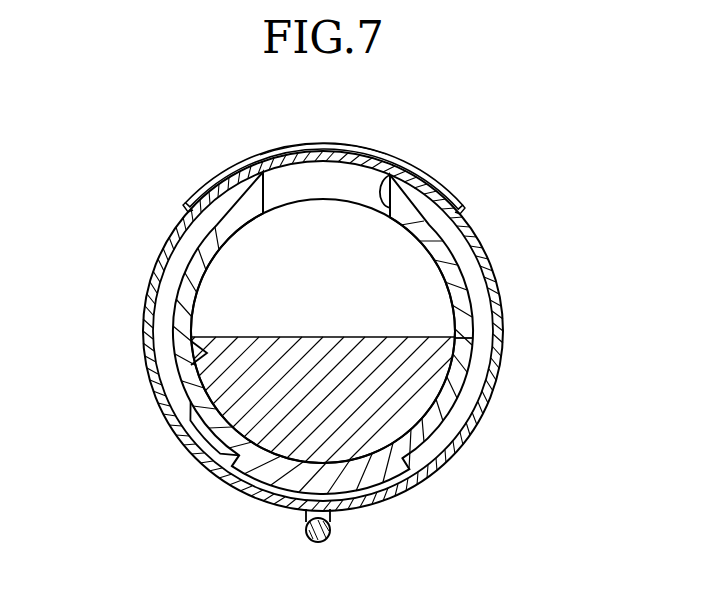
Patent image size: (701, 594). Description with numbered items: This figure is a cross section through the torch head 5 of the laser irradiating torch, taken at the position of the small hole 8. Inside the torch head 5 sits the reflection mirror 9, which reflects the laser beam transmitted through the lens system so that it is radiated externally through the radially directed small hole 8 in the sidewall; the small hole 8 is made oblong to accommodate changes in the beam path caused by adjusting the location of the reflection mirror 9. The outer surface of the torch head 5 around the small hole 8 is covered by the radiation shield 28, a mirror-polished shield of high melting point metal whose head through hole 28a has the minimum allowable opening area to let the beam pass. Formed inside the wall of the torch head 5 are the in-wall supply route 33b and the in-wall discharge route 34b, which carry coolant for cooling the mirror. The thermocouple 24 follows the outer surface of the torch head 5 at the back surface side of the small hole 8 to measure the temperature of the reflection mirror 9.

The torch head 5 is at (398, 490).
The small hole 8 is at (392, 173).
The reflection mirror 9 is at (427, 413).
The thermocouple 24 is at (305, 521).
The radiation shield 28 is at (443, 189).
The head through hole 28a is at (363, 153).
The in-wall supply route 33b is at (482, 343).
The in-wall discharge route 34b is at (174, 282).